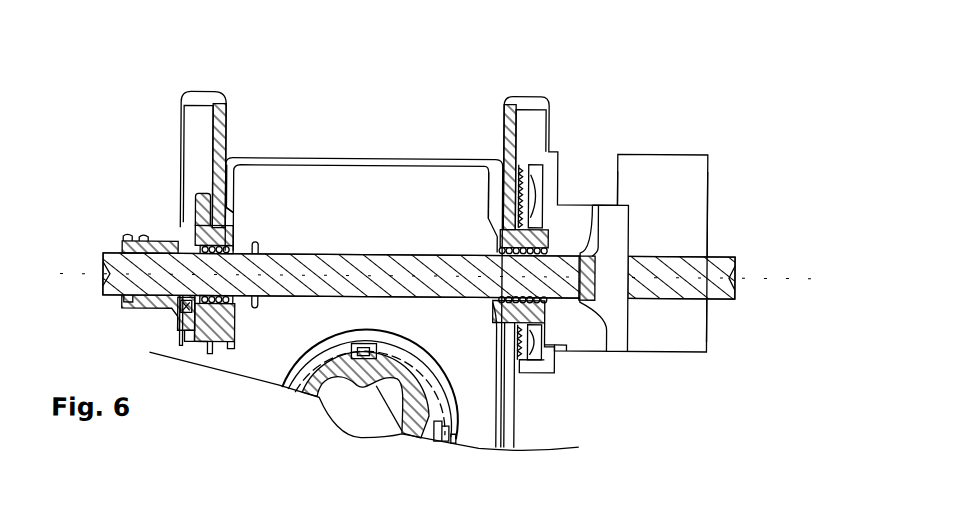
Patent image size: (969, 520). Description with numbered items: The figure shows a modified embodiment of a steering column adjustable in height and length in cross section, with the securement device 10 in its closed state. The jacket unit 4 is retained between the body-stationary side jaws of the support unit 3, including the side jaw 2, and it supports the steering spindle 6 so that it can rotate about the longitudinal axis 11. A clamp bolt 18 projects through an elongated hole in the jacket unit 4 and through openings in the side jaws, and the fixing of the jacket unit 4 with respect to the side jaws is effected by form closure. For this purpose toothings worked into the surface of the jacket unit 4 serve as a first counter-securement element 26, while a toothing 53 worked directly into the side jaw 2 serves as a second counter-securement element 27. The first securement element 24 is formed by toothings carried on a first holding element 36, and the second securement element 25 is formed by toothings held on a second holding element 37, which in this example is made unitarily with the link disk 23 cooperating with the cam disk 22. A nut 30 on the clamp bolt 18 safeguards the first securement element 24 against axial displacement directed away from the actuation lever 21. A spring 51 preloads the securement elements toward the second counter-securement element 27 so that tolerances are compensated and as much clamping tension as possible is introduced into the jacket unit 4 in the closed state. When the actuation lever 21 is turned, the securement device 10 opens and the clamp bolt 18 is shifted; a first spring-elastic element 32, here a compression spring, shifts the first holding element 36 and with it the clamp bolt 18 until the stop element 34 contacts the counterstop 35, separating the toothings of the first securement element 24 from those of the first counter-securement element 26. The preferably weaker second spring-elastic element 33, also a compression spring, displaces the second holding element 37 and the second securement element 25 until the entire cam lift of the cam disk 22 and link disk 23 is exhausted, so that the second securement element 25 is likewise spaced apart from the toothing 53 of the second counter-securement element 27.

The side jaw 2 is at (515, 94).
The support unit 3 is at (192, 91).
The jacket unit 4 is at (376, 161).
The steering spindle 6 is at (408, 426).
The securement device 10 is at (718, 251).
The longitudinal axis 11 is at (364, 418).
The clamp bolt 18 is at (333, 252).
The actuation lever 21 is at (686, 197).
The cam disk 22 is at (612, 221).
The link disk 23 is at (567, 339).
The first securement element 24 is at (200, 197).
The second securement element 25 is at (537, 169).
The first counter-securement element 26 is at (234, 246).
The second counter-securement element 27 is at (497, 159).
The nut 30 is at (140, 302).
The first spring-elastic element 32 is at (181, 244).
The second spring-elastic element 33 is at (549, 301).
The stop element 34 is at (259, 251).
The counterstop 35 is at (241, 227).
The first holding element 36 is at (198, 232).
The second holding element 37 is at (568, 366).
The spring 51 is at (540, 346).
The toothing 53 is at (513, 159).